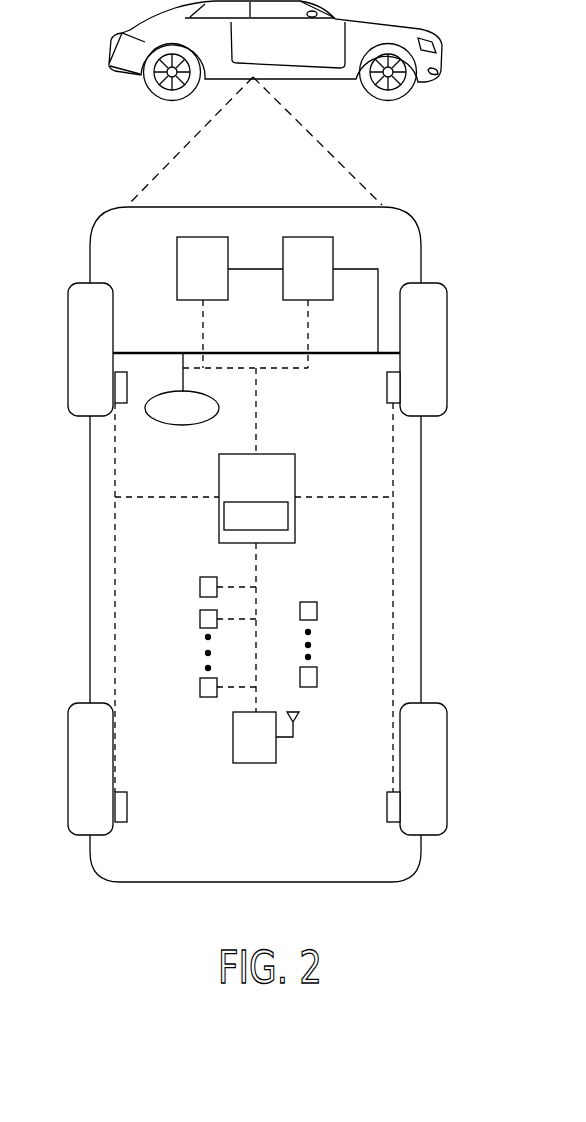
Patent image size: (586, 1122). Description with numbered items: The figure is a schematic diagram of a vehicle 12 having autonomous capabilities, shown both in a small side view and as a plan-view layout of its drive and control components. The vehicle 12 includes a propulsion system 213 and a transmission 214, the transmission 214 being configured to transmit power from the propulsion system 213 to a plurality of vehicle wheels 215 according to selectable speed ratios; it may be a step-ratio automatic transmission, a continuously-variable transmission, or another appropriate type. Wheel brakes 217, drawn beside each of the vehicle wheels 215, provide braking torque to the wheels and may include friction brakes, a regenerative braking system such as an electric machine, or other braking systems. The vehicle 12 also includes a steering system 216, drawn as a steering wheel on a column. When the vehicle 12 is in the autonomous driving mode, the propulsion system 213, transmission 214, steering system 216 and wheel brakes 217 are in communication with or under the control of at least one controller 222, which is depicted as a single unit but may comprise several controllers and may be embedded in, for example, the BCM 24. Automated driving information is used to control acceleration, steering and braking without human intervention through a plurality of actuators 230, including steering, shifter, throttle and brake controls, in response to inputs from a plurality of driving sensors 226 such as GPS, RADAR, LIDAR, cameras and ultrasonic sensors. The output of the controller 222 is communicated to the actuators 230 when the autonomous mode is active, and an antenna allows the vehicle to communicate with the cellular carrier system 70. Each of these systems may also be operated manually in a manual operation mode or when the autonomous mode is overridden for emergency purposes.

The vehicle 12 is at (112, 42).
The propulsion system 213 is at (177, 268).
The transmission 214 is at (333, 250).
The vehicle wheels 215 is at (113, 338).
The steering system 216 is at (182, 427).
The wheel brakes 217 is at (387, 383).
The controller 222 is at (295, 494).
The BCM 24 is at (272, 530).
The driving sensors 226 is at (200, 585).
The actuators 230 is at (317, 611).
The cellular carrier system 70 is at (298, 730).